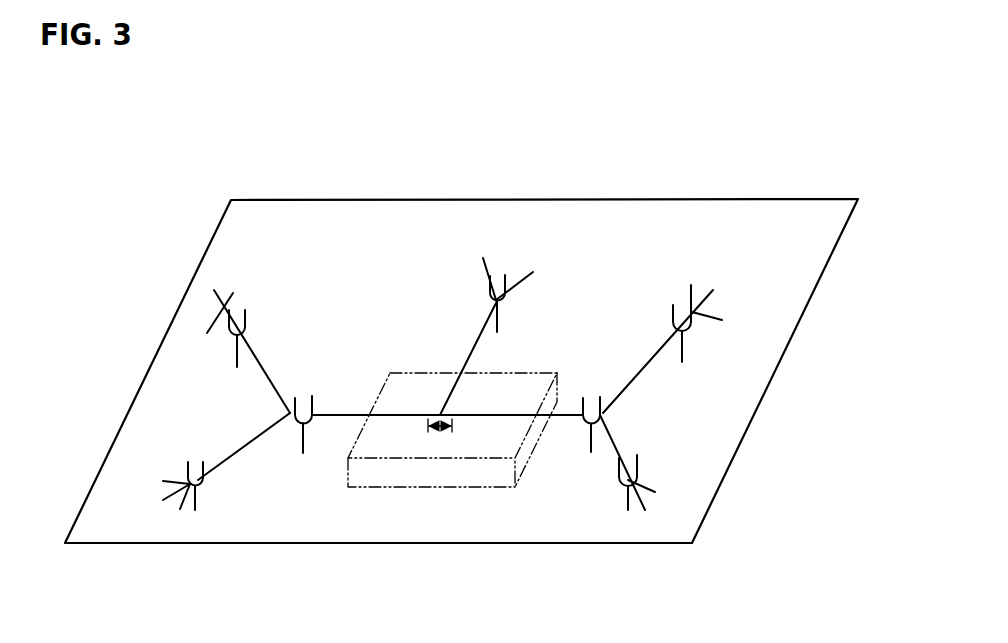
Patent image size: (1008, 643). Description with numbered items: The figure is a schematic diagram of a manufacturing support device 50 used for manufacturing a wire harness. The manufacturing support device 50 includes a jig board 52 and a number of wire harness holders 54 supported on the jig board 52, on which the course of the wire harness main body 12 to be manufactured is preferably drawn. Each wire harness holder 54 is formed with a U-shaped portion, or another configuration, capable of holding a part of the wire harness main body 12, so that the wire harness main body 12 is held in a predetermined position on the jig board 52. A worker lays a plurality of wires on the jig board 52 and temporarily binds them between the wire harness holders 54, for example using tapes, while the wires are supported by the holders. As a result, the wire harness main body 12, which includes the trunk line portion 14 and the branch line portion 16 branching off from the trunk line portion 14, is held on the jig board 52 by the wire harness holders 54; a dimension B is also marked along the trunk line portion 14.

The manufacturing support device 50 is at (657, 196).
The jig board 52 is at (787, 283).
The wire harness main body 12 is at (647, 362).
The trunk line portion 14 is at (472, 417).
The branch line portion 16 is at (470, 357).
The wire harness holders 54 is at (235, 345).
The width dimension B is at (431, 430).